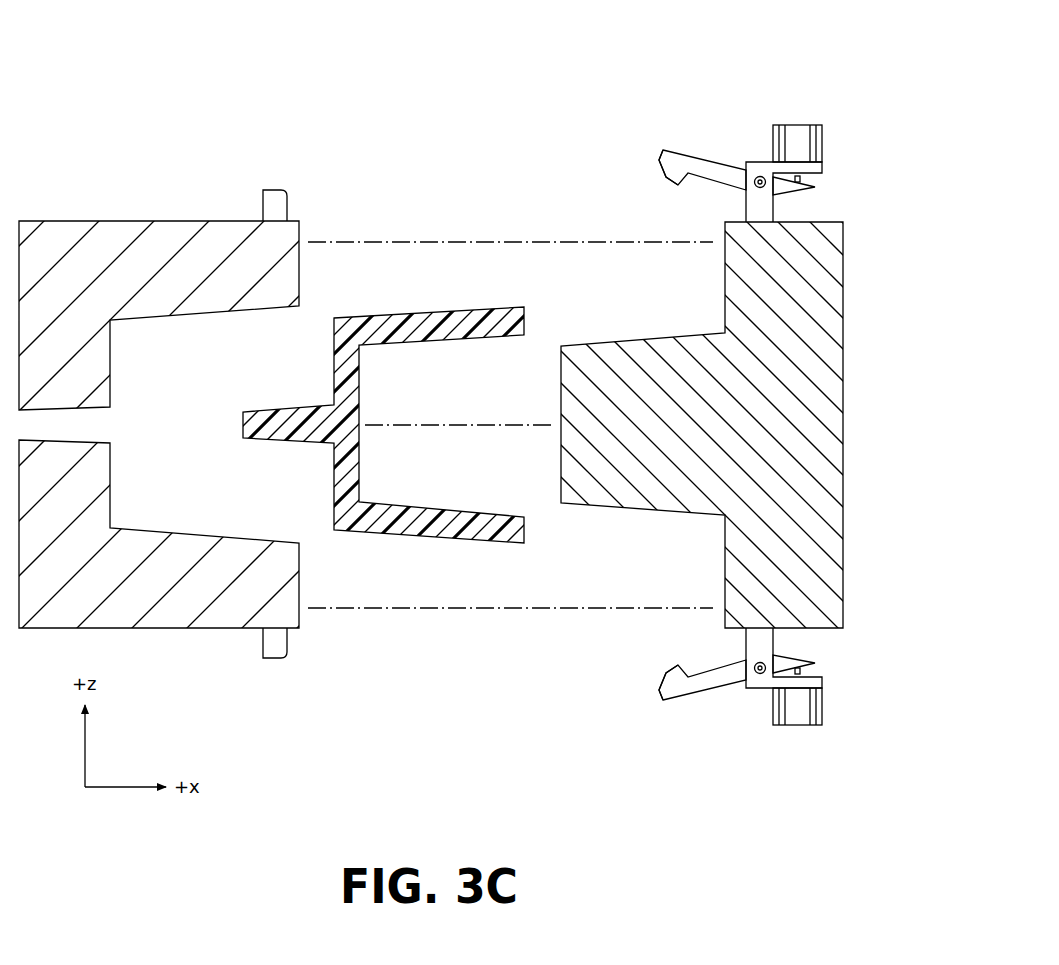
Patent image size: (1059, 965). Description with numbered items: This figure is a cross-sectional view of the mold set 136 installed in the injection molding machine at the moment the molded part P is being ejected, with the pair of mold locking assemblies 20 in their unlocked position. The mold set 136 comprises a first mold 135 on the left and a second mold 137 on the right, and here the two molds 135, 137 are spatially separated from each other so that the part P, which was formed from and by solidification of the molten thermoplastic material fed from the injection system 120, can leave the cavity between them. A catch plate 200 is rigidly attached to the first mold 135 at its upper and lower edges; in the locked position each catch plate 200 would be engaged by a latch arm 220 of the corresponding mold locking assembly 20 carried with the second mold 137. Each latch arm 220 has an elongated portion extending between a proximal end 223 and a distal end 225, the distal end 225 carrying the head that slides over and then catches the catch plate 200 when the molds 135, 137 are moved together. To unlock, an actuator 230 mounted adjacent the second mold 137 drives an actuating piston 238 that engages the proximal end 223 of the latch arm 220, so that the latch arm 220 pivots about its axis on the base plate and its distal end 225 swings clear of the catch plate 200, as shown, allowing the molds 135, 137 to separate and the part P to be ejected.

The mold locking assembly 20 is at (810, 88).
The injection system 120 is at (798, 744).
The mold 135 is at (87, 220).
The mold set 136 is at (370, 120).
The mold 137 is at (843, 428).
The catch plate 200 is at (268, 206).
The latch arm 220 is at (721, 161).
The proximal end 223 is at (770, 190).
The distal end 225 is at (668, 162).
The actuator 230 is at (824, 134).
The actuating piston 238 is at (800, 183).
The part P is at (413, 313).